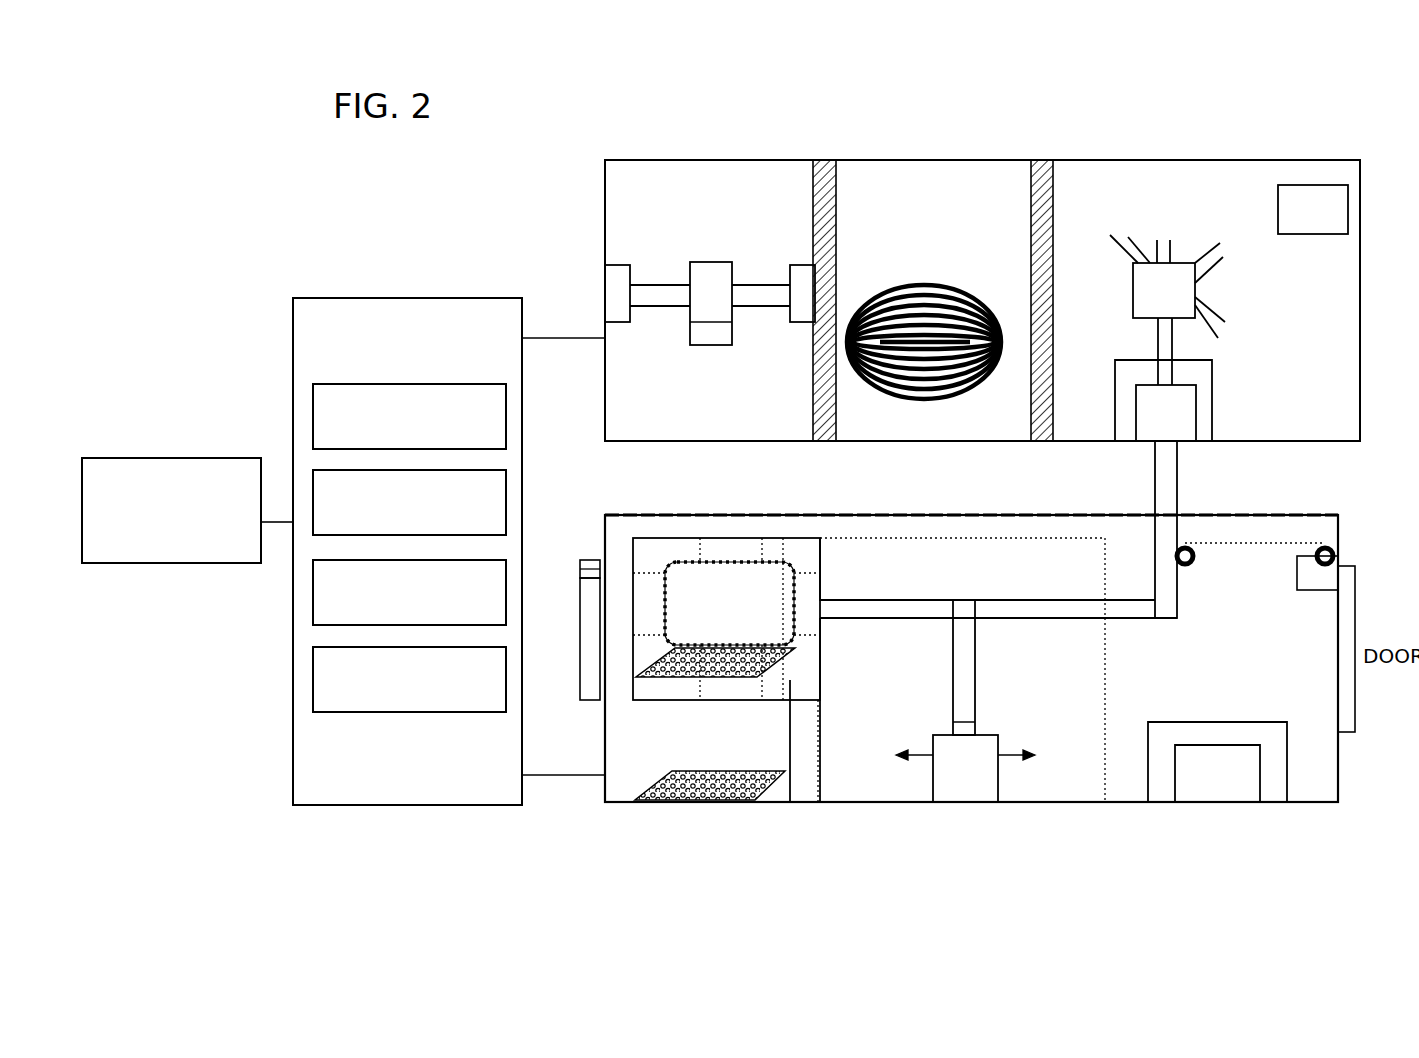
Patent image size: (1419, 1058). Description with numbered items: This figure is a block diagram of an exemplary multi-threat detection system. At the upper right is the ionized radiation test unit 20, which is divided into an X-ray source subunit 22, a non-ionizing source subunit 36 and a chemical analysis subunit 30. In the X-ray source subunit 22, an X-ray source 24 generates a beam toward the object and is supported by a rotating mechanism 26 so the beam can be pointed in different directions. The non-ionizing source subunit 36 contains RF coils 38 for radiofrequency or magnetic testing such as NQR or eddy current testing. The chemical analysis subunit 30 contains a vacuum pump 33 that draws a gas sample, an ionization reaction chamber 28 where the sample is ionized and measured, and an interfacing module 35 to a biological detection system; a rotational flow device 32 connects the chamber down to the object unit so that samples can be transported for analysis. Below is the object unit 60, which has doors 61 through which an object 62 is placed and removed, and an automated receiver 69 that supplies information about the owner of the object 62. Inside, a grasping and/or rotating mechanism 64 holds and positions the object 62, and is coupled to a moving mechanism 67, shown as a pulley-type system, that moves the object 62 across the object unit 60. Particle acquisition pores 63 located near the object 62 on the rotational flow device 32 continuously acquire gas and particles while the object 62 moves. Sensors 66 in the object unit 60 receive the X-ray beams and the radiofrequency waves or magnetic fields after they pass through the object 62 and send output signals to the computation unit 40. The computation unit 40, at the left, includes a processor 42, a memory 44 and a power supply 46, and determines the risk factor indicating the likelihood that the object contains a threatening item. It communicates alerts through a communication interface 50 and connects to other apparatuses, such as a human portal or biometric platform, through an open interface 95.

The ionized radiation test unit 20 is at (1282, 107).
The X-ray source subunit 22 is at (820, 154).
The X-ray source 24 is at (724, 305).
The rotating mechanism 26 is at (668, 290).
The ionization reaction chamber 28 is at (1180, 418).
The chemical analysis subunit 30 is at (1359, 154).
The rotational flow device 32 is at (1115, 612).
The vacuum pump 33 is at (1177, 301).
The interfacing module 35 is at (1325, 221).
The non-ionizing source subunit 36 is at (1037, 154).
The RF coils 38 is at (972, 285).
The computation unit 40 is at (423, 336).
The processor 42 is at (423, 497).
The memory 44 is at (423, 587).
The power supply 46 is at (423, 674).
The communication interface 50 is at (184, 489).
The object unit 60 is at (1342, 832).
The door 61 is at (598, 673).
The object 62 is at (740, 620).
The particle acquisition pores 63 is at (663, 592).
The grasping and/or rotating mechanism 64 is at (801, 680).
The sensors 66 is at (650, 690).
The moving mechanism 67 is at (1338, 553).
The automated receiver 69 is at (580, 567).
The open interface 95 is at (423, 411).